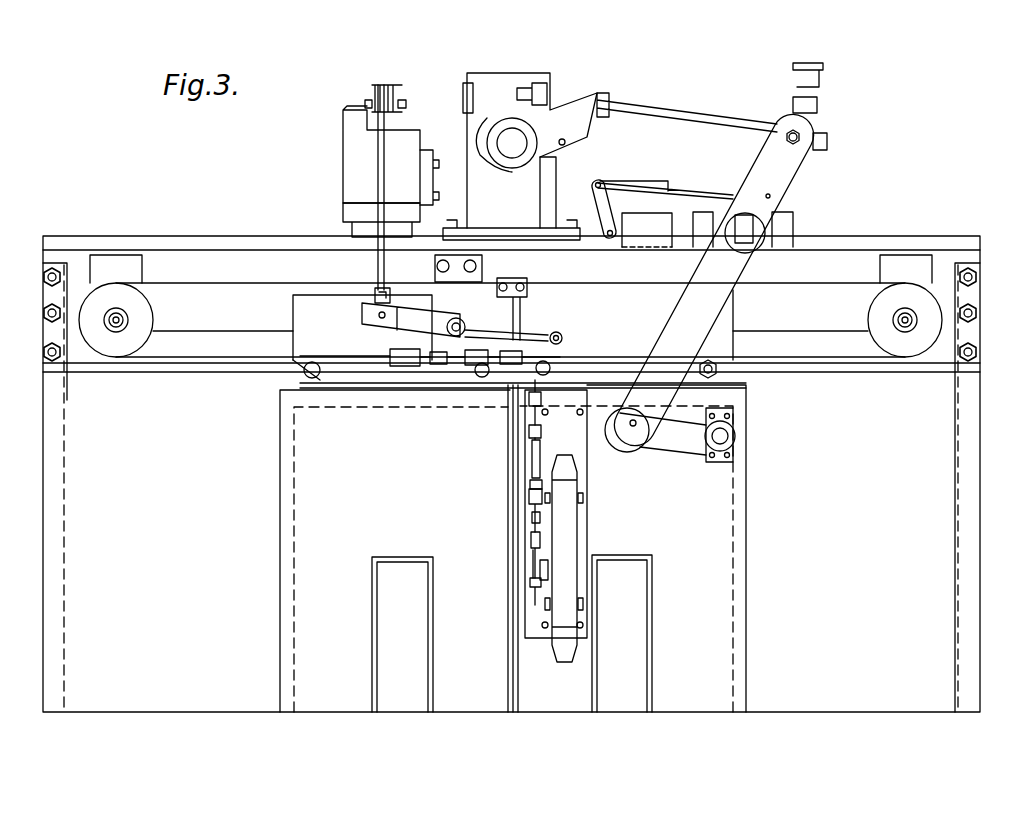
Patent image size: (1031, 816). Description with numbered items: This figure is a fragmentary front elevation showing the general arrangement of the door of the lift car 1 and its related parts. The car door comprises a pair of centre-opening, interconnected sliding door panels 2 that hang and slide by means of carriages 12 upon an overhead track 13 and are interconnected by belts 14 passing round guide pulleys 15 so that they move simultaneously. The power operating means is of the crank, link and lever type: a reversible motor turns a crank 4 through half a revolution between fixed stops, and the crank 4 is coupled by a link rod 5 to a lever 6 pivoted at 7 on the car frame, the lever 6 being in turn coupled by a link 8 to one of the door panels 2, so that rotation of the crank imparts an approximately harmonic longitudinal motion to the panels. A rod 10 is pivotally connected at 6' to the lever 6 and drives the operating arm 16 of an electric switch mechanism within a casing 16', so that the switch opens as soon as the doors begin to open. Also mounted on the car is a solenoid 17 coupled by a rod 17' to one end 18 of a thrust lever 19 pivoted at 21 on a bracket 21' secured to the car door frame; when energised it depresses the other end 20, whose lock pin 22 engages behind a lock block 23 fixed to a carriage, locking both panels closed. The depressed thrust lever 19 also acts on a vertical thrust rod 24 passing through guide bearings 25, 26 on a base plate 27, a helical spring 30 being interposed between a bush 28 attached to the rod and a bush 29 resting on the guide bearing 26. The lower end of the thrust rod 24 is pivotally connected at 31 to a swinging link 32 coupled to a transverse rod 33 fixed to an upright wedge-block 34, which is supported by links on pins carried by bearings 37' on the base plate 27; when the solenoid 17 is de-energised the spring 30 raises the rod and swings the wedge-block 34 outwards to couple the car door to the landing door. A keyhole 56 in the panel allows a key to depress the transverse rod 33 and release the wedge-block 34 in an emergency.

The lift car 1 is at (985, 404).
The door panels 2 is at (286, 548).
The crank 4 is at (546, 160).
The link rod 5 is at (701, 116).
The lever 6 is at (721, 254).
The pivotal connection 6' is at (788, 190).
The pivot 7 is at (726, 240).
The link 8 is at (680, 440).
The rod 10 is at (710, 192).
The carriages 12 is at (293, 313).
The overhead track 13 is at (200, 320).
The belts 14 is at (251, 284).
The guide pulleys 15 is at (138, 318).
The operating arm 16 is at (589, 209).
The casing 16' is at (647, 245).
The solenoid 17 is at (374, 161).
The rod 17' is at (367, 187).
The end of thrust lever 18 is at (362, 310).
The thrust lever 19 is at (401, 322).
The end of thrust lever 20 is at (553, 334).
The pivot 21 is at (461, 313).
The bracket 21' is at (439, 268).
The lock pin 22 is at (563, 340).
The lock block 23 is at (541, 335).
The vertical thrust rod 24 is at (551, 375).
The guide bearing 25 is at (543, 400).
The guide bearing 26 is at (528, 497).
The base plate 27 is at (588, 478).
The bush 28 is at (543, 437).
The bush 29 is at (529, 478).
The helical spring 30 is at (530, 445).
The pivotal connection 31 is at (530, 540).
The swinging link 32 is at (535, 560).
The transverse rod 33 is at (530, 585).
The wedge-block 34 is at (566, 530).
The bearings 37' is at (562, 558).
The keyhole 56 is at (540, 572).